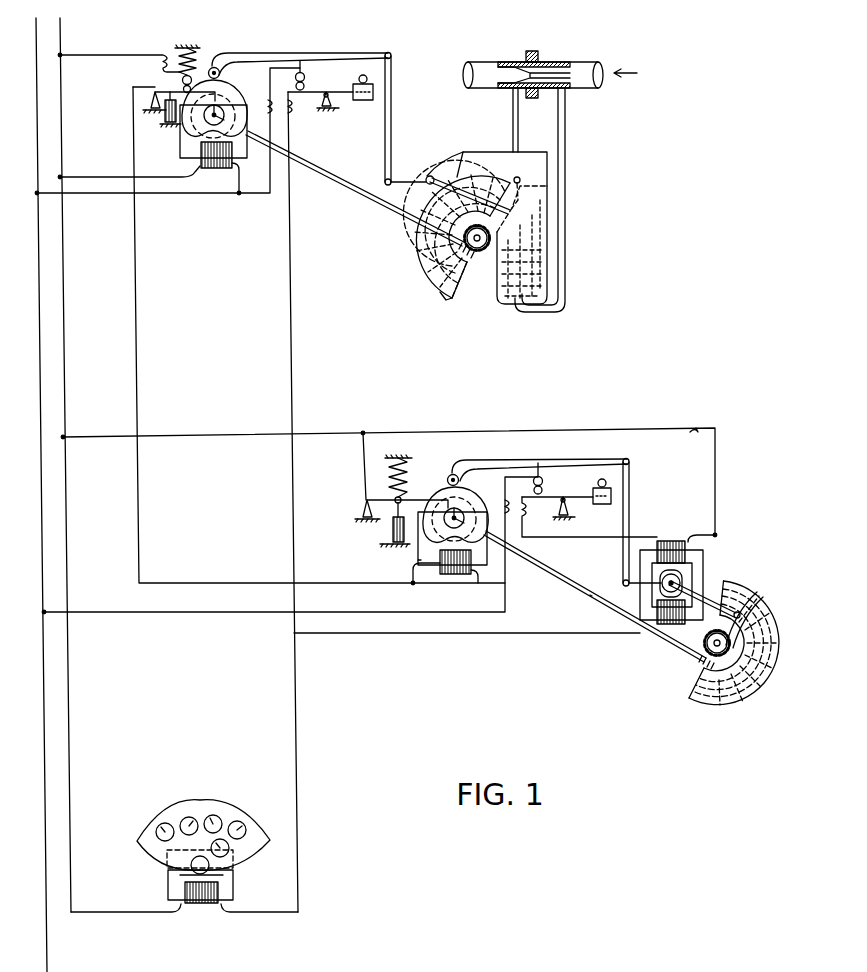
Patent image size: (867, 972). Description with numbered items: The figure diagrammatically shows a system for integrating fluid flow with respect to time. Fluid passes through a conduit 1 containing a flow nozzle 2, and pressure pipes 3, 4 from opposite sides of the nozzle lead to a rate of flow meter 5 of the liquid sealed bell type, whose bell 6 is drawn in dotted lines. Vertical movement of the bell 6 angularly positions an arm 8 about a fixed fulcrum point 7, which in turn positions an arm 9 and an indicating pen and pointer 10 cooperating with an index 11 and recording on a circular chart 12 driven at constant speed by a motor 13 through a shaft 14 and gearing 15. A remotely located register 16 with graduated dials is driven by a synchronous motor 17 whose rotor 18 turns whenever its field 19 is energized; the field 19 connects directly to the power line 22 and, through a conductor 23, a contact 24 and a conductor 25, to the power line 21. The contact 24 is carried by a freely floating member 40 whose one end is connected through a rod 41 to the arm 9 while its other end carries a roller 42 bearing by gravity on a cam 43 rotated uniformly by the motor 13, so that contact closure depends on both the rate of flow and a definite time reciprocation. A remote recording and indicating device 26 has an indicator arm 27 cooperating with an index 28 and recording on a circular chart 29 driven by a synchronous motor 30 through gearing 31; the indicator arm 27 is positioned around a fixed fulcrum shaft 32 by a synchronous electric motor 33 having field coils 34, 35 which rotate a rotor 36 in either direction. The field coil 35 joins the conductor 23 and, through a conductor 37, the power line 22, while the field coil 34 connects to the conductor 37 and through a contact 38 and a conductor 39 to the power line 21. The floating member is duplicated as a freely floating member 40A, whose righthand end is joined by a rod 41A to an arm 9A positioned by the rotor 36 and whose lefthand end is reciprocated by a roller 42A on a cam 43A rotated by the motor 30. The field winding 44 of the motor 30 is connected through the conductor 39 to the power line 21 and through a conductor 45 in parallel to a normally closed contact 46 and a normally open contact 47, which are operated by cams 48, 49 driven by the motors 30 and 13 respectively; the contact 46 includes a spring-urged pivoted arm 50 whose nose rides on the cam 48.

The conduit 1 is at (551, 63).
The flow nozzle 2 is at (534, 74).
The pressure pipe 3 is at (567, 110).
The pressure pipe 4 is at (513, 102).
The rate of flow meter 5 is at (428, 229).
The bell 6 is at (533, 266).
The fixed fulcrum point 7 is at (436, 168).
The arm 8 is at (455, 153).
The arm 9 is at (405, 178).
The indicating pen and pointer 10 is at (432, 198).
The index 11 is at (518, 190).
The circular chart 12 is at (426, 278).
The motor 13 is at (178, 156).
The shaft 14 is at (315, 168).
The gearing 15 is at (479, 263).
The register 16 is at (188, 863).
The synchronous motor 17 is at (234, 880).
The rotor 18 is at (169, 875).
The field 19 is at (201, 905).
The power line 21 is at (38, 677).
The power line 22 is at (72, 722).
The conductor 23 is at (299, 708).
The contact 24 is at (310, 84).
The conductor 25 is at (196, 194).
The recording and/or indicating device 26 is at (571, 605).
The indicator arm 27 is at (739, 612).
The index 28 is at (761, 605).
The circular chart 29 is at (748, 704).
The synchronous motor 30 is at (418, 560).
The gearing 31 is at (702, 664).
The fixed fulcrum shaft 32 is at (684, 585).
The synchronous electric motor 33 is at (636, 617).
The field coil 34 is at (662, 542).
The field coil 35 is at (671, 637).
The rotor 36 is at (684, 578).
The conductor 37 is at (656, 427).
The contact 38 is at (548, 488).
The conductor 39 is at (226, 612).
The freely floating member 40 is at (328, 50).
The freely floating member 40A is at (591, 444).
The rod 41 is at (392, 102).
The rod 41A is at (629, 479).
The roller 42 is at (221, 70).
The roller 42A is at (450, 474).
The cam 43 is at (235, 92).
The cam 43A is at (465, 500).
The field winding 44 is at (447, 578).
The conductor 45 is at (206, 585).
The contact 46 is at (390, 527).
The contact 47 is at (167, 85).
The cam 48 is at (466, 510).
The cam 49 is at (183, 129).
The arm 50 is at (436, 499).
The arm 9A is at (626, 588).